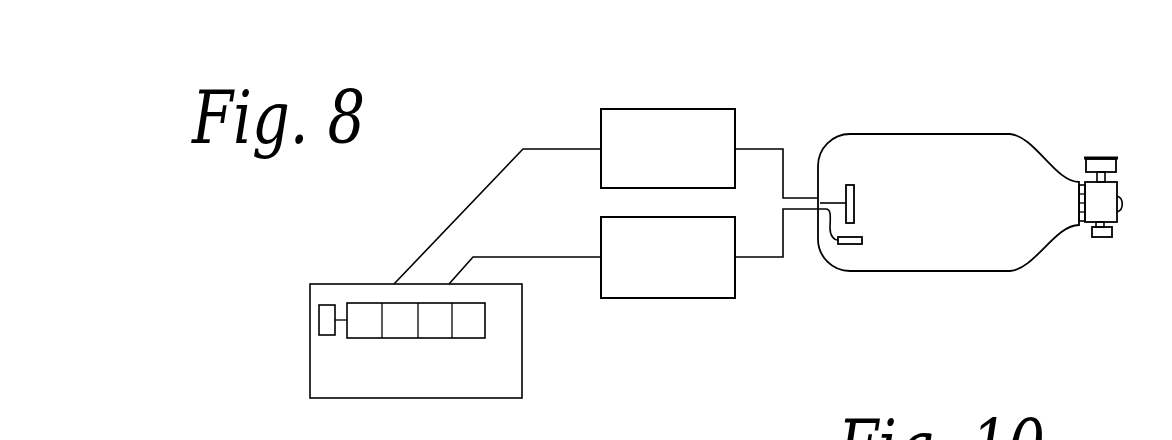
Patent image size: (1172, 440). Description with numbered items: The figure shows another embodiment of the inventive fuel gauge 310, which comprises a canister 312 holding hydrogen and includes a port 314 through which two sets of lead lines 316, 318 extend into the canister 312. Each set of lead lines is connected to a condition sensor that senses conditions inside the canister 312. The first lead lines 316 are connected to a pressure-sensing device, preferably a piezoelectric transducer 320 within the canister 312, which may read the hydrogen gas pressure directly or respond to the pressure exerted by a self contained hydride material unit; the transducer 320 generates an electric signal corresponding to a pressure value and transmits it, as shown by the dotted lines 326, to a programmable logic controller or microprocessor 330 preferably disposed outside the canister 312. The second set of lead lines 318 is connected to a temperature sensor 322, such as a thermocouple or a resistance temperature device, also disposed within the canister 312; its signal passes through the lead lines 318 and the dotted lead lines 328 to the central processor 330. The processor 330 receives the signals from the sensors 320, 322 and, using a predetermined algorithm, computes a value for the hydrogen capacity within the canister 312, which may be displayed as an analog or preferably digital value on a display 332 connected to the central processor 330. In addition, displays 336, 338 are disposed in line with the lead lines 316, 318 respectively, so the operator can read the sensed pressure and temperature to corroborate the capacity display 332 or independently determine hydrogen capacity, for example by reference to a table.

The fuel gauge 310 is at (1063, 68).
The canister 312 is at (977, 134).
The port 314 is at (822, 197).
The lead lines 316 is at (802, 198).
The lead lines 318 is at (801, 209).
The piezoelectric transducer 320 is at (855, 208).
The temperature sensor 322 is at (865, 240).
The dotted lines 326 is at (523, 149).
The dotted lead lines 328 is at (557, 257).
The central processor 330 is at (470, 340).
The display 332 is at (320, 332).
The display 336 is at (642, 109).
The display 338 is at (680, 298).